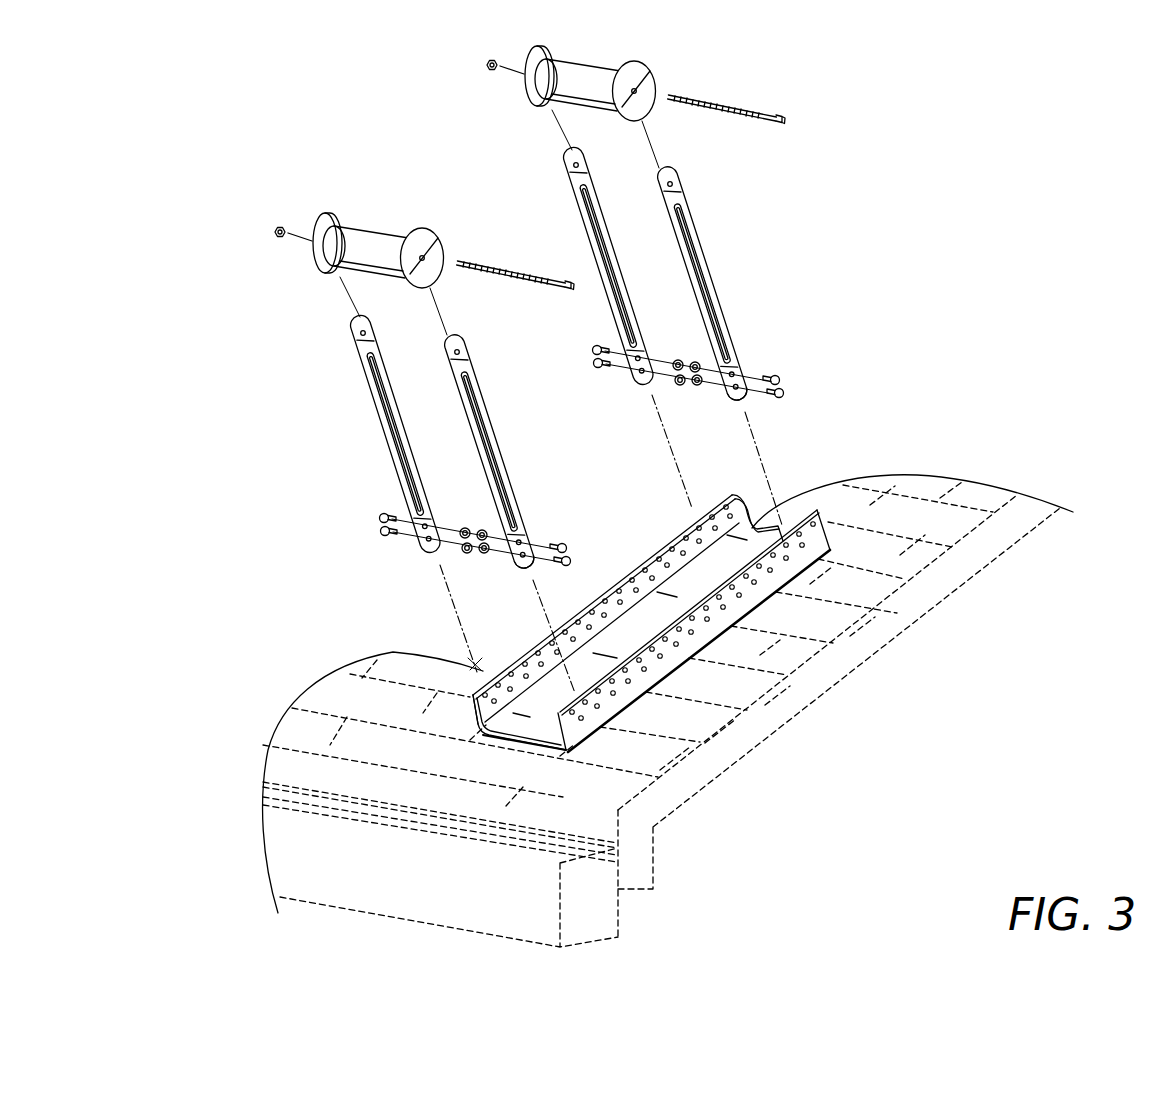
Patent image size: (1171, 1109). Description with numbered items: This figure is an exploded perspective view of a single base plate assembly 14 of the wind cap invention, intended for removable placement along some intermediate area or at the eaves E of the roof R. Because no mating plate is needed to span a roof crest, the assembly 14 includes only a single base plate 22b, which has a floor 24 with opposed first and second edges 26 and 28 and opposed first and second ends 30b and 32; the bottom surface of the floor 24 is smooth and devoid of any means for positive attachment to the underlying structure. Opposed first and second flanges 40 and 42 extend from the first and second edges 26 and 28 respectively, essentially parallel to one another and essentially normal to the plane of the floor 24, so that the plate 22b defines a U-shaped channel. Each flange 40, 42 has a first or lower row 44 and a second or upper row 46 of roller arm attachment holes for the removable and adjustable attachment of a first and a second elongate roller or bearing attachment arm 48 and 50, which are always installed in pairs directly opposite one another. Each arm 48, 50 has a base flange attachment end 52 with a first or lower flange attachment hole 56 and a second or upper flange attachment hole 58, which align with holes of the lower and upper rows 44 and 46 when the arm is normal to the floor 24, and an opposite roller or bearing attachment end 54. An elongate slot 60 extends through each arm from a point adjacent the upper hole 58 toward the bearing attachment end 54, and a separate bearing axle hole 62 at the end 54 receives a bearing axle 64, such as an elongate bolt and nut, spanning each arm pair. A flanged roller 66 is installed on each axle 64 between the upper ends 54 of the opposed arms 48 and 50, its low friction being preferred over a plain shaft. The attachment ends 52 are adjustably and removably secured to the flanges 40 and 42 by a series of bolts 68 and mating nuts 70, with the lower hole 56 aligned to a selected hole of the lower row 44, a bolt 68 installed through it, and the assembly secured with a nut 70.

The base plate assembly 14 is at (264, 595).
The base plate 22b is at (565, 757).
The floor 24 is at (658, 599).
The first edge 26 is at (640, 690).
The second edge 28 is at (606, 600).
The first end 30b is at (505, 742).
The second end 32 is at (757, 524).
The first flange 40 is at (730, 634).
The second flange 42 is at (528, 657).
The first or lower row of roller arm attachment holes 44 is at (812, 528).
The second or upper row of roller arm attachment holes 46 is at (790, 497).
The first elongate roller or bearing attachment arm 48 is at (500, 445).
The second elongate roller or bearing attachment arm 50 is at (375, 420).
The base flange attachment end 52 is at (443, 562).
The roller or bearing attachment end 54 is at (350, 336).
The first or lower flange attachment hole 56 is at (432, 565).
The second or upper flange attachment hole 58 is at (420, 545).
The elongate slot 60 is at (395, 458).
The bearing axle hole 62 is at (446, 352).
The bearing axle 64 is at (532, 272).
The flanged roller 66 is at (312, 252).
The bolts 68 is at (380, 528).
The nuts 70 is at (481, 530).
The eaves E is at (358, 843).
The roof R is at (807, 662).